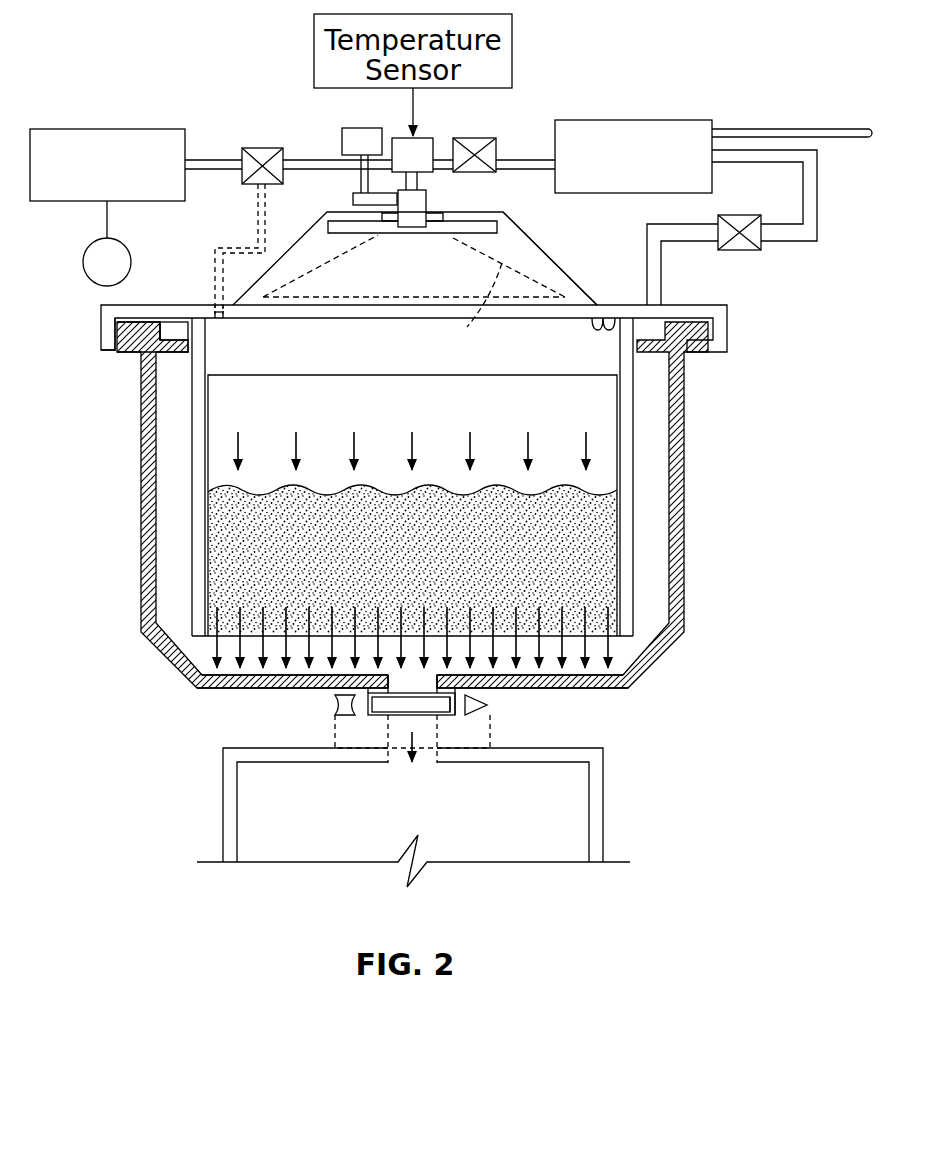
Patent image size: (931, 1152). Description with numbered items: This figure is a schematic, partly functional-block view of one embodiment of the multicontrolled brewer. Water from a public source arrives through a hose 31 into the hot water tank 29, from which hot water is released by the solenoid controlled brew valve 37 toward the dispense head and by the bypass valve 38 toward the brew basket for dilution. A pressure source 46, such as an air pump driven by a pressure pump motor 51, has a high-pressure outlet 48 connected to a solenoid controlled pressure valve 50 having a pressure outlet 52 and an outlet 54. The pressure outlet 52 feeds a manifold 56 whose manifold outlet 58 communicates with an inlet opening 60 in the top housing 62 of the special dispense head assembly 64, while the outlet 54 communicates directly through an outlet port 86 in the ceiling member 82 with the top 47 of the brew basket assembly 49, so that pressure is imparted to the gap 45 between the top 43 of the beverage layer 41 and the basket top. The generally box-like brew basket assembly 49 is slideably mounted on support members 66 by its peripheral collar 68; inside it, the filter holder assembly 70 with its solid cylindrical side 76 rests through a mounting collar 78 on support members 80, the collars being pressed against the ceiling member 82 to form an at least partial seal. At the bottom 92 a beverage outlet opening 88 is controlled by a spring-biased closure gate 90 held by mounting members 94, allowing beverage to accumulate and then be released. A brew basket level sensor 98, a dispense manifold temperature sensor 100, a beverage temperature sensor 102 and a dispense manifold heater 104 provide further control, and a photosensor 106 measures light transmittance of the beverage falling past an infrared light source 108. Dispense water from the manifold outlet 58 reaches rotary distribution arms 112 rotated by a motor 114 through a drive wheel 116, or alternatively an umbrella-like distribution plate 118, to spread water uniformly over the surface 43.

The hot water tank 29 is at (656, 120).
The hose 31 is at (775, 128).
The brew valve 37 is at (487, 137).
The bypass valve 38 is at (745, 215).
The beverage layer 41 is at (220, 577).
The top of the beverage layer 43 is at (540, 490).
The gap 45 is at (425, 365).
The pressure source 46 is at (84, 128).
The top of the brew basket assembly 47 is at (626, 322).
The high-pressure outlet 48 is at (212, 160).
The brew basket assembly 49 is at (688, 532).
The pressure valve 50 is at (262, 148).
The pressure pump motor 51 is at (84, 262).
The pressure outlet 52 is at (337, 158).
The outlet 54 is at (252, 218).
The manifold 56 is at (430, 137).
The manifold outlet 58 is at (420, 183).
The inlet opening 60 is at (418, 223).
The top housing 62 is at (540, 260).
The dispense head assembly 64 is at (580, 281).
The support members 66 is at (108, 340).
The peripheral collar 68 is at (103, 312).
The filter holder assembly 70 is at (190, 472).
The solid cylindrical side 76 is at (197, 522).
The mounting collar 78 is at (176, 328).
The support members 80 is at (158, 352).
The ceiling member 82 is at (133, 318).
The outlet port 86 is at (223, 313).
The beverage outlet opening 88 is at (410, 686).
The closure gate 90 is at (403, 707).
The bottom 92 is at (232, 689).
The mounting members 94 is at (443, 723).
The brew basket level sensor 98 is at (614, 333).
The dispense manifold temperature sensor 100 is at (392, 162).
The beverage temperature sensor 102 is at (591, 322).
The dispense manifold heater 104 is at (390, 221).
The photosensor 106 is at (338, 706).
The infrared light source 108 is at (490, 706).
The distribution arms 112 is at (503, 224).
The motor 114 is at (358, 127).
The drive wheel 116 is at (355, 197).
The distribution plate 118 is at (472, 309).